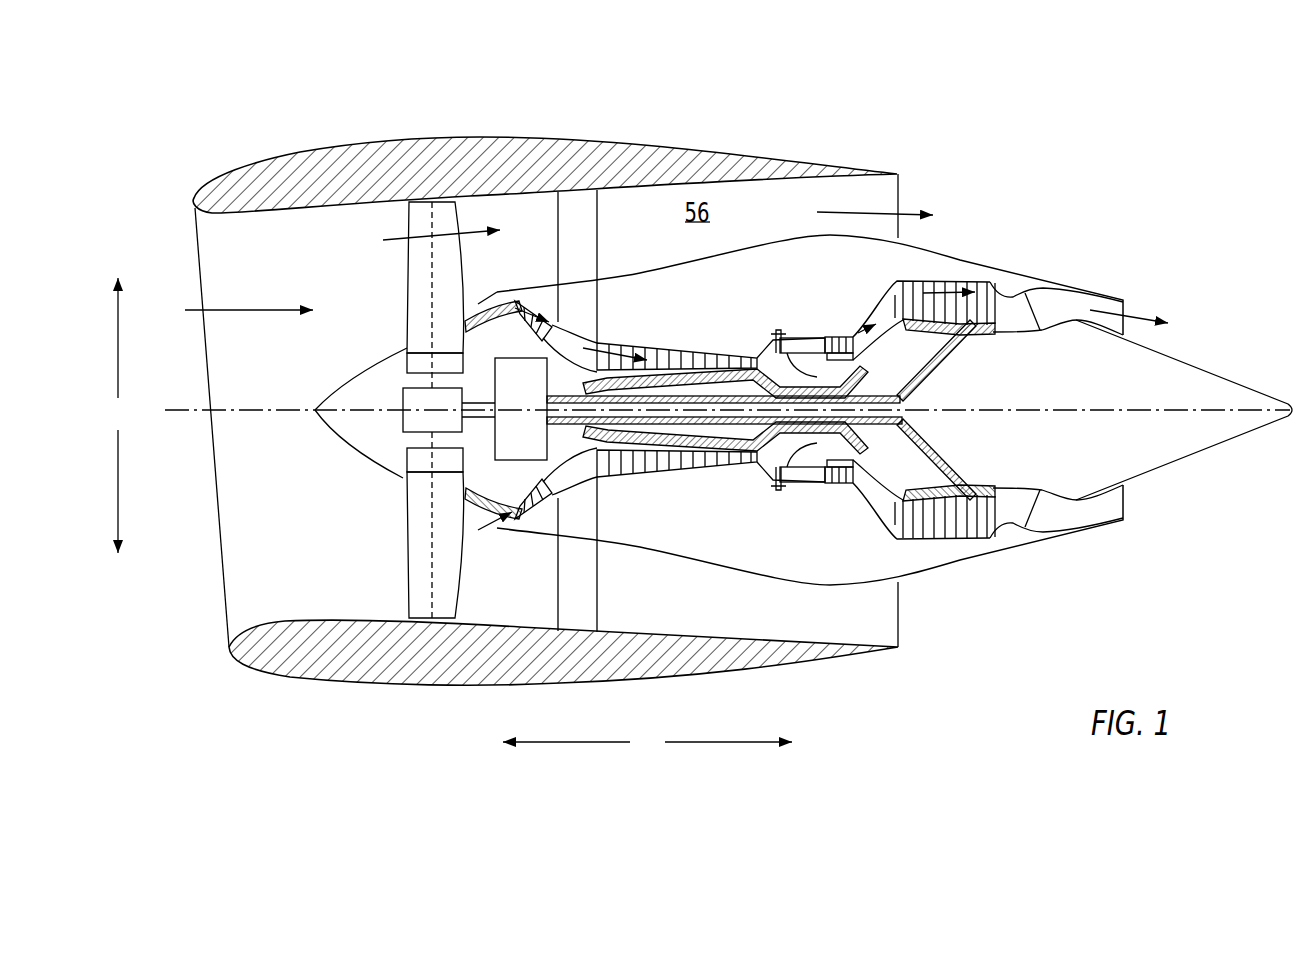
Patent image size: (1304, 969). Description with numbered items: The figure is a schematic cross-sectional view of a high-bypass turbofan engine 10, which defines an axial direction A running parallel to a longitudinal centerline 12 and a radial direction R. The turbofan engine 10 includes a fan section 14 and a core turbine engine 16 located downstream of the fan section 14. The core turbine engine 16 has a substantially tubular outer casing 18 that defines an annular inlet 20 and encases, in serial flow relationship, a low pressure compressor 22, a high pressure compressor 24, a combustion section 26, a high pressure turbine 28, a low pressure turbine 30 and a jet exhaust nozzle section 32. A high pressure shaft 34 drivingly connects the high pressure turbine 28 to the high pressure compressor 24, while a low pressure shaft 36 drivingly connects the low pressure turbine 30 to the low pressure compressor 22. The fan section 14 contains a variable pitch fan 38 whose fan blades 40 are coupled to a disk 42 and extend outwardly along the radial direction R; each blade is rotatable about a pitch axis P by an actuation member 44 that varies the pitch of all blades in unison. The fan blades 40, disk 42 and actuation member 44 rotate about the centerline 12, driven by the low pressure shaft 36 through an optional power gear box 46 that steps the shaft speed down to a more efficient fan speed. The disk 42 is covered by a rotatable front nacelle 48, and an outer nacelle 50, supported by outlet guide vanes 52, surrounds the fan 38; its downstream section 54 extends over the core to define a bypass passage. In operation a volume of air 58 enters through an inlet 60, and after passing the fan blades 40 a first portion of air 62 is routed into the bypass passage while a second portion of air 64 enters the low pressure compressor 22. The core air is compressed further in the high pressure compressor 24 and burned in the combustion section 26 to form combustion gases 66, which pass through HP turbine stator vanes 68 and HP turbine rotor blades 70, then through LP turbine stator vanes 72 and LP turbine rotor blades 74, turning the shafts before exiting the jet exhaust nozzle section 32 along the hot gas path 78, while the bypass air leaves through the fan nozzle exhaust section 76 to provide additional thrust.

The turbofan engine 10 is at (1043, 150).
The longitudinal centerline 12 is at (1065, 410).
The fan section 14 is at (362, 222).
The core turbine engine 16 is at (770, 223).
The outer casing 18 is at (757, 573).
The annular inlet 20 is at (497, 527).
The low pressure compressor 22 is at (568, 473).
The high pressure compressor 24 is at (625, 467).
The combustion section 26 is at (797, 472).
The high pressure turbine 28 is at (875, 490).
The low pressure turbine 30 is at (980, 538).
The jet exhaust nozzle section 32 is at (1040, 522).
The high pressure shaft 34 is at (833, 368).
The low pressure shaft 36 is at (940, 376).
The variable pitch fan 38 is at (368, 465).
The fan blades 40 is at (405, 560).
The disk 42 is at (407, 365).
The actuation member 44 is at (403, 393).
The power gear box 46 is at (532, 373).
The front nacelle 48 is at (325, 428).
The outer nacelle 50 is at (452, 683).
The outlet guide vanes 52 is at (599, 220).
The downstream section 54 is at (842, 162).
The volume of air 58 is at (247, 310).
The inlet 60 is at (227, 620).
The first portion of air 62 is at (422, 240).
The second portion of air 64 is at (488, 300).
The combustion gases 66 is at (940, 283).
The HP turbine stator vanes 68 is at (813, 477).
The HP turbine rotor blades 70 is at (840, 463).
The LP turbine stator vanes 72 is at (905, 536).
The LP turbine rotor blades 74 is at (917, 540).
The fan nozzle exhaust section 76 is at (887, 198).
The hot gas path 78 is at (890, 317).
The pitch axis P is at (432, 217).
The radial direction R is at (118, 415).
The axial direction A is at (647, 741).